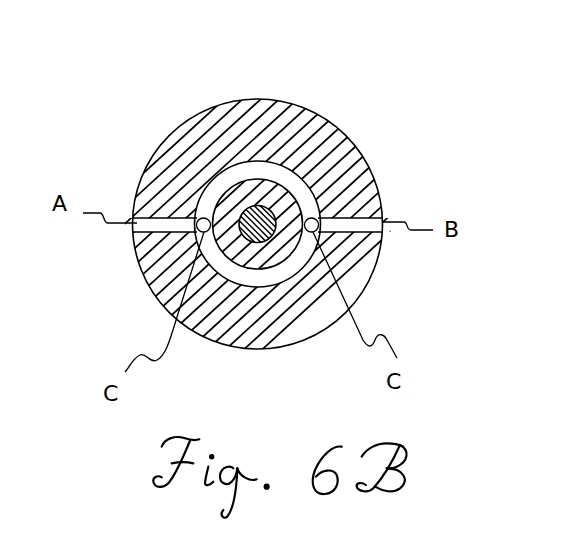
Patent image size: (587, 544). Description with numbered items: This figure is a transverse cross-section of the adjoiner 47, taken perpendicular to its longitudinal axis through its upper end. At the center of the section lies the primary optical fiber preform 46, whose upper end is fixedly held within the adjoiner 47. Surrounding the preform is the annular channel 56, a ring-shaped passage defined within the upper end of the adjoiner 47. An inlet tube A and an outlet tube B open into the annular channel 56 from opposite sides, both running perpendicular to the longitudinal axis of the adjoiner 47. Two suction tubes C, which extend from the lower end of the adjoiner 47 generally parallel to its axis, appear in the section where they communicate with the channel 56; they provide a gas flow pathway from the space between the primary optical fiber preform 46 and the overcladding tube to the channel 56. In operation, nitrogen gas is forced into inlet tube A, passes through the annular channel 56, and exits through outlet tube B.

The adjoiner 47 is at (177, 88).
The annular channel 56 is at (230, 177).
The primary optical fiber preform 46 is at (263, 204).